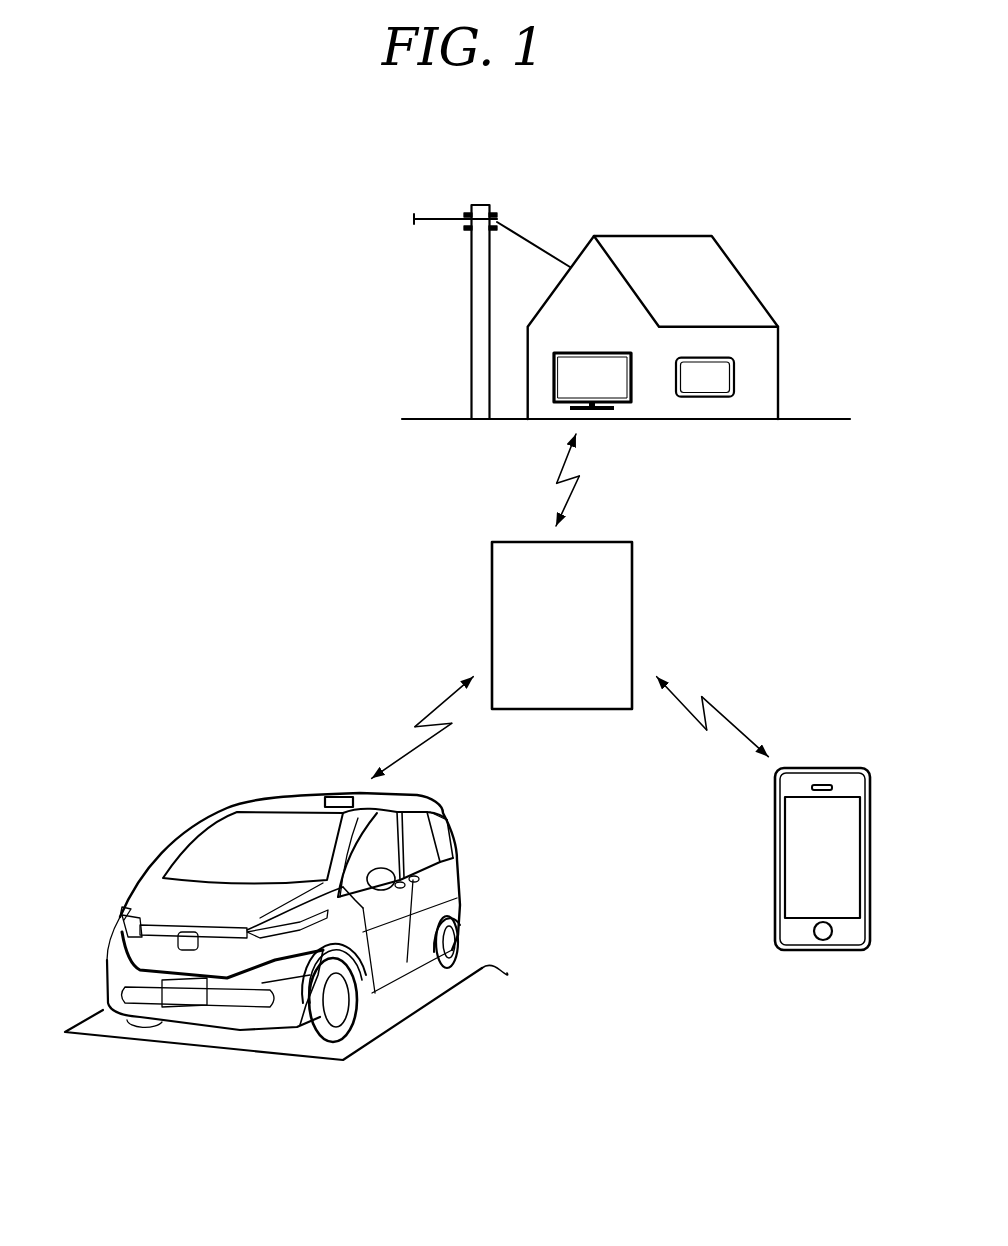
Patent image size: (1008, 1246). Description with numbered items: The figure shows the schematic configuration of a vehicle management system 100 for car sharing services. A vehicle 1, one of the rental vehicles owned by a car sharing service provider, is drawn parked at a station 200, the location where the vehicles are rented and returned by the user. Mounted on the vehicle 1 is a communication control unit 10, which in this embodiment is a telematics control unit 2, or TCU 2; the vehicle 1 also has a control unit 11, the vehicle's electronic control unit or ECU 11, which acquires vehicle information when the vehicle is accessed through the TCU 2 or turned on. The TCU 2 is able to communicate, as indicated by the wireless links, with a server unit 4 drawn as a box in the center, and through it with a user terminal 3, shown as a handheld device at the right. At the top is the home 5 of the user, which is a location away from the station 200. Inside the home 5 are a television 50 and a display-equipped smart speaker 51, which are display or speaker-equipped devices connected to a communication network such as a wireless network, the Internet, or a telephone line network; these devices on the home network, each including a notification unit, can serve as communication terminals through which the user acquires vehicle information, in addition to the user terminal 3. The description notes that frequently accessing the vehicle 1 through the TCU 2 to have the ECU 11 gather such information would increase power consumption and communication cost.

The vehicle management system 100 is at (227, 364).
The vehicle 1 is at (290, 796).
The telematics control unit 2 is at (352, 769).
The communication control unit 10 is at (338, 797).
The control unit 11 is at (167, 908).
The station 200 is at (88, 1027).
The user terminal 3 is at (843, 768).
The server unit 4 is at (600, 541).
The home 5 is at (670, 236).
The television 50 is at (597, 351).
The display-equipped smart speaker 51 is at (708, 357).